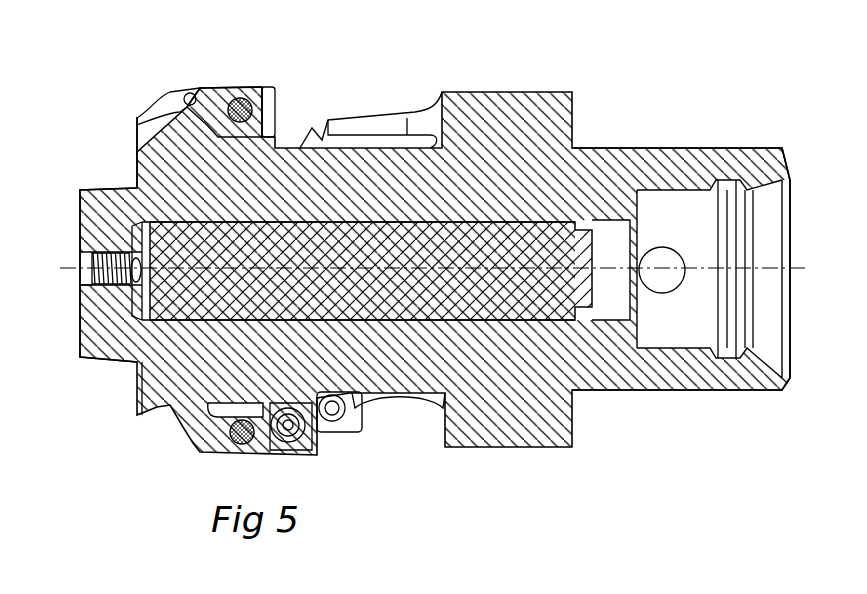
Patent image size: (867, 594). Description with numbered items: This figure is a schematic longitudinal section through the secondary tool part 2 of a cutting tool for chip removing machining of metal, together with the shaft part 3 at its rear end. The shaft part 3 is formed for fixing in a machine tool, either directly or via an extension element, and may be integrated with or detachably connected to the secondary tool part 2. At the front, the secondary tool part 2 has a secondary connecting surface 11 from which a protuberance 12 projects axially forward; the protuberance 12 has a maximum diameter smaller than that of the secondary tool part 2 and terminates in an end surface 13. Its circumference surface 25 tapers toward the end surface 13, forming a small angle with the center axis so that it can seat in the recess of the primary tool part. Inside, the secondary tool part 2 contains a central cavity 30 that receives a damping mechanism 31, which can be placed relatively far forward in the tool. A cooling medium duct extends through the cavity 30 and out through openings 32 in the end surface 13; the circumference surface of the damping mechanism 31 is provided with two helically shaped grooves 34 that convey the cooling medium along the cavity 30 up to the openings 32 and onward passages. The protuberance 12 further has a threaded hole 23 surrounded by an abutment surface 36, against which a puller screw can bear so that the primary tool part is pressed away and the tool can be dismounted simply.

The secondary tool part 2 is at (165, 80).
The shaft part 3 is at (682, 160).
The secondary connecting surface 11 is at (133, 373).
The protuberance 12 is at (85, 212).
The end surface 13 is at (78, 336).
The threaded hole 23 is at (82, 264).
The circumference surface 25 is at (110, 185).
The central cavity 30 is at (625, 254).
The damping mechanism 31 is at (494, 232).
The openings 32 is at (136, 277).
The helically shaped grooves 34 is at (229, 220).
The abutment surface 36 is at (82, 290).